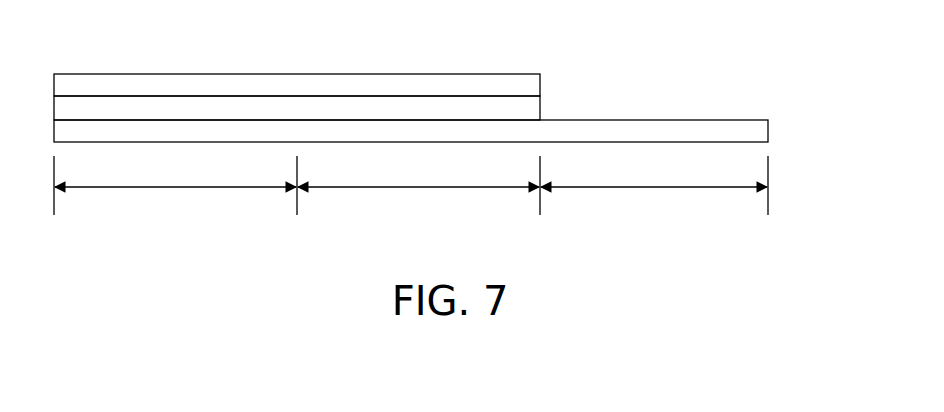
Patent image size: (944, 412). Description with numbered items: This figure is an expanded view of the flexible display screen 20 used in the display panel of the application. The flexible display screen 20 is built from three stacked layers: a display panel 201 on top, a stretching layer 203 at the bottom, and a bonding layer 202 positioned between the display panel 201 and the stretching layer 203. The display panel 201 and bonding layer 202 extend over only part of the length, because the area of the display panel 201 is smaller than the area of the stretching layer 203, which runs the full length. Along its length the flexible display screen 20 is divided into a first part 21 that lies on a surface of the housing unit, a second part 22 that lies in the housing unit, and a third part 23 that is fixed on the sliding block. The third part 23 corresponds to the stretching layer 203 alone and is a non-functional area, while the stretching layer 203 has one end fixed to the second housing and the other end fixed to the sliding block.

The flexible display screen 20 is at (148, 38).
The display panel 201 is at (540, 84).
The bonding layer 202 is at (540, 108).
The stretching layer 203 is at (768, 131).
The first part 21 is at (175, 177).
The second part 22 is at (418, 177).
The third part 23 is at (654, 177).